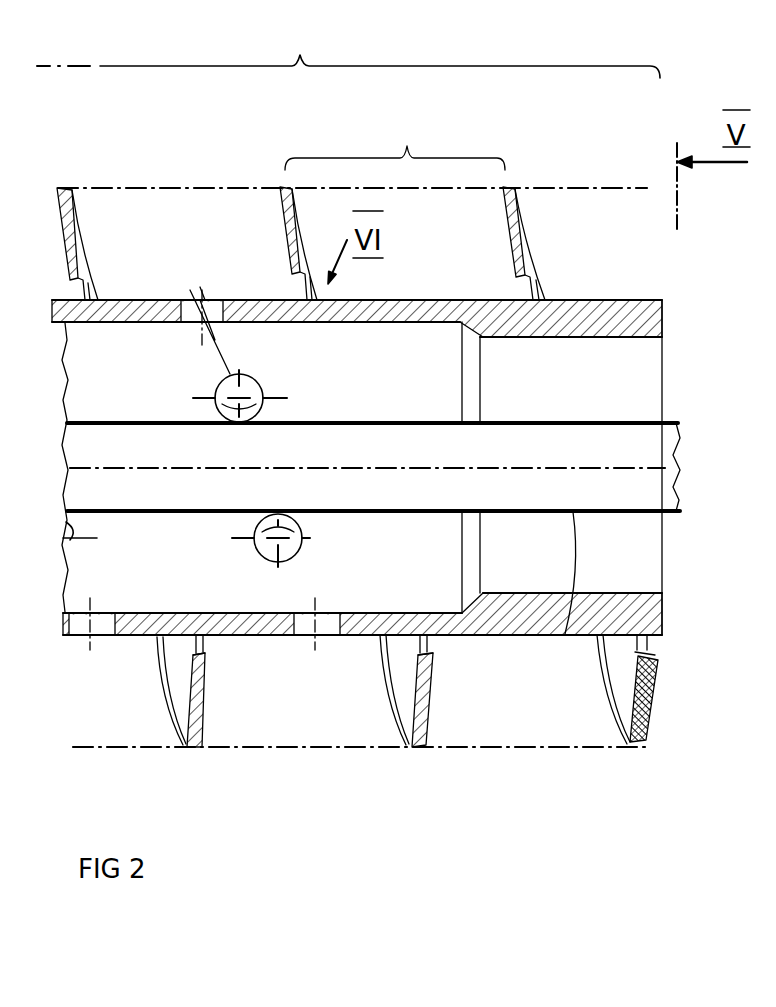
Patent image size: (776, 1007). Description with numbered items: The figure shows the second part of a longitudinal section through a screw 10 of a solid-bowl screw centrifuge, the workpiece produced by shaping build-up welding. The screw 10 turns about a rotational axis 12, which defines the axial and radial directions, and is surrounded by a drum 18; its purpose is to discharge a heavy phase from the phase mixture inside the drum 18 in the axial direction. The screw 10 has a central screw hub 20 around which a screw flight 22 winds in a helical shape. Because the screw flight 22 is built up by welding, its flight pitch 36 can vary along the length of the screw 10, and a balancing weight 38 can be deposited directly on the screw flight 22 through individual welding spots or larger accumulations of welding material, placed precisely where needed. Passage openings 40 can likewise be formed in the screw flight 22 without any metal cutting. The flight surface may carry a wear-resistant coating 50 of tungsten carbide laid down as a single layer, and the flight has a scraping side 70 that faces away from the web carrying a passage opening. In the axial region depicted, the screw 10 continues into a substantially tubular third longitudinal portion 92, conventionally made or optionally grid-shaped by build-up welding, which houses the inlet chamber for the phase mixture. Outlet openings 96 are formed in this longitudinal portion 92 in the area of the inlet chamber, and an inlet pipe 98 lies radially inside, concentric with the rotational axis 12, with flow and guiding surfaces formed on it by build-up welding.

The screw 10 is at (153, 236).
The rotational axis 12 is at (657, 458).
The drum 18 is at (260, 183).
The screw hub 20 is at (608, 290).
The screw flight 22 is at (530, 226).
The flight pitch 36 is at (395, 138).
The balancing weight 38 is at (655, 713).
The passage openings 40 is at (430, 650).
The wear-resistant coating 50 is at (403, 735).
The scraping side 70 is at (278, 233).
The third longitudinal portion 92 is at (348, 48).
The outlet openings 96 is at (190, 290).
The inlet pipe 98 is at (565, 635).